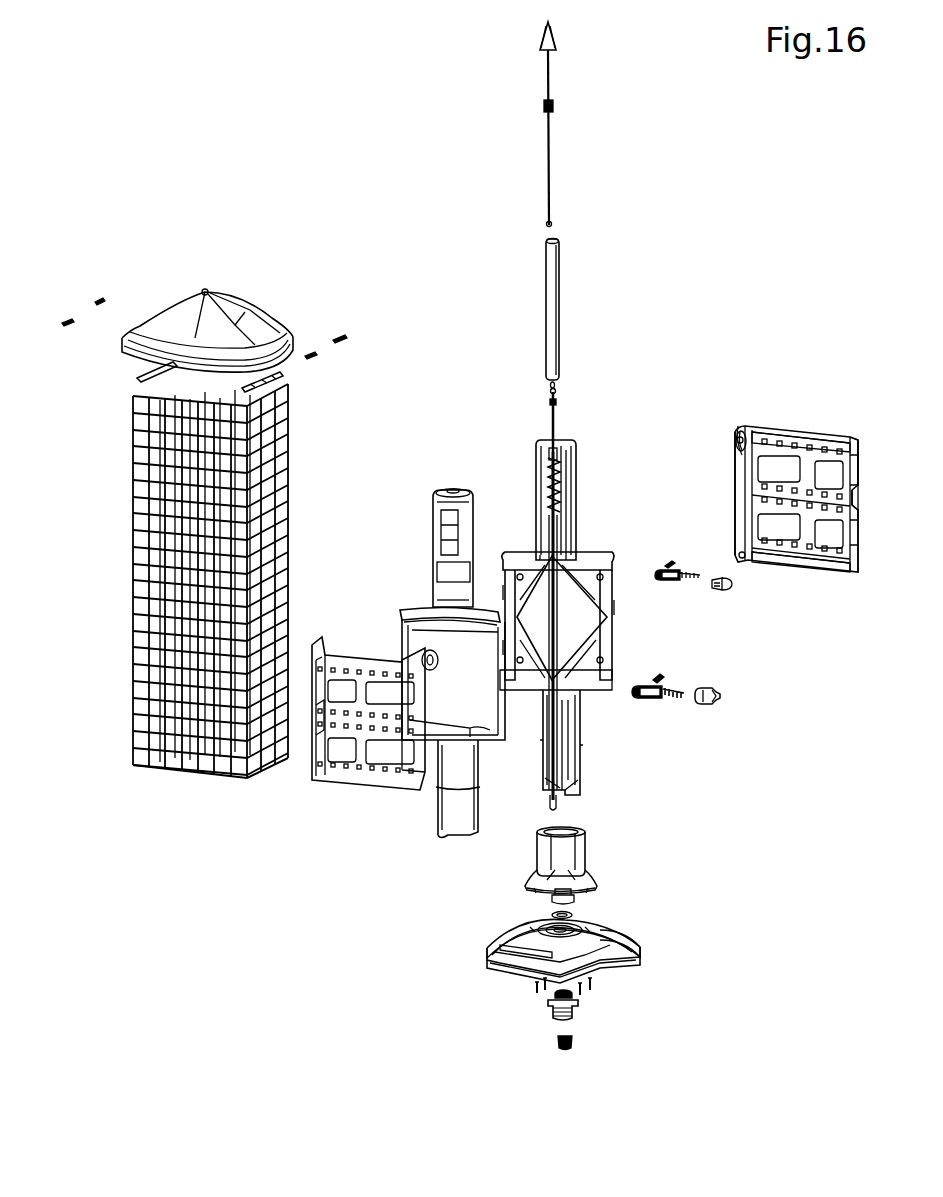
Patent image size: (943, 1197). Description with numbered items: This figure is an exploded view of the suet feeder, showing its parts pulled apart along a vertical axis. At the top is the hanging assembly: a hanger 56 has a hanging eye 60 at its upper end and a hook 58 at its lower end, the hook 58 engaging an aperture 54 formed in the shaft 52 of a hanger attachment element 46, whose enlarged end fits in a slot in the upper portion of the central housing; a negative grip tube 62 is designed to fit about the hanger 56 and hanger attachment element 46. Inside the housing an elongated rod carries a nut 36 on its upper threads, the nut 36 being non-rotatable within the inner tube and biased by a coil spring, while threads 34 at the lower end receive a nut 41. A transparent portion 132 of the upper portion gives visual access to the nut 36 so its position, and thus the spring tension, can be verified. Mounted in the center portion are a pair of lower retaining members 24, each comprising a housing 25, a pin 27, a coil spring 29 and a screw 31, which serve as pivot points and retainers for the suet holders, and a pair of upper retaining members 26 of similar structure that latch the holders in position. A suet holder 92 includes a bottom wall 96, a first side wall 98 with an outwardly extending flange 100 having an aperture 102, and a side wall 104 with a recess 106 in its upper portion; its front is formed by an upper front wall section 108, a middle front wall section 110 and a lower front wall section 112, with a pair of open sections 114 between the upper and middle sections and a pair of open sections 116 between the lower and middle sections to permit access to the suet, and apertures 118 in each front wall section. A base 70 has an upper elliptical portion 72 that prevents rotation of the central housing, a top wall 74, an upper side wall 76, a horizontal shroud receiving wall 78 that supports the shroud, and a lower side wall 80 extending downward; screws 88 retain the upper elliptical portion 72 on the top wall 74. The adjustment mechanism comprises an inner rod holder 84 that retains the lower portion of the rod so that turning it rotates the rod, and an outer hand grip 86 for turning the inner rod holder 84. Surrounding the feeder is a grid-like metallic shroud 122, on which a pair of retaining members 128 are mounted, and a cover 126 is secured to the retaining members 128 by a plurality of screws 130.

The hanging eye 60 is at (555, 46).
The hanger 56 is at (552, 158).
The hook 58 is at (546, 223).
The negative grip tube 62 is at (560, 285).
The aperture 54 is at (549, 403).
The shaft 52 is at (558, 422).
The hanger attachment element 46 is at (575, 434).
The nut 36 is at (546, 467).
The threads 34 is at (560, 808).
The transparent portion 132 is at (432, 526).
The first side wall 98 is at (750, 495).
The shroud 122 is at (120, 432).
The retaining members 128 is at (135, 378).
The screws 130 is at (107, 299).
The cover 126 is at (282, 313).
The suet holder 92 is at (806, 415).
The upper front wall section 108 is at (778, 428).
The apertures 118 is at (815, 445).
The open sections 116 is at (758, 525).
The open sections 114 is at (830, 470).
The aperture 102 is at (735, 433).
The flange 100 is at (730, 448).
The recess 106 is at (848, 460).
The side wall 104 is at (858, 512).
The middle front wall section 110 is at (772, 502).
The lower front wall section 112 is at (835, 555).
The bottom wall 96 is at (778, 560).
The upper retaining members 26 is at (666, 600).
The lower retaining members 24 is at (662, 664).
The screw 31 is at (666, 677).
The housing 25 is at (640, 700).
The coil spring 29 is at (673, 700).
The pin 27 is at (708, 706).
The base 70 is at (634, 920).
The upper elliptical portion 72 is at (573, 863).
The top wall 74 is at (515, 928).
The shroud receiving wall 78 is at (488, 946).
The upper side wall 76 is at (640, 945).
The lower side wall 80 is at (500, 960).
The screws 88 is at (598, 985).
The inner rod holder 84 is at (553, 997).
The outer hand grip 86 is at (580, 1012).
The nut 41 is at (572, 1047).